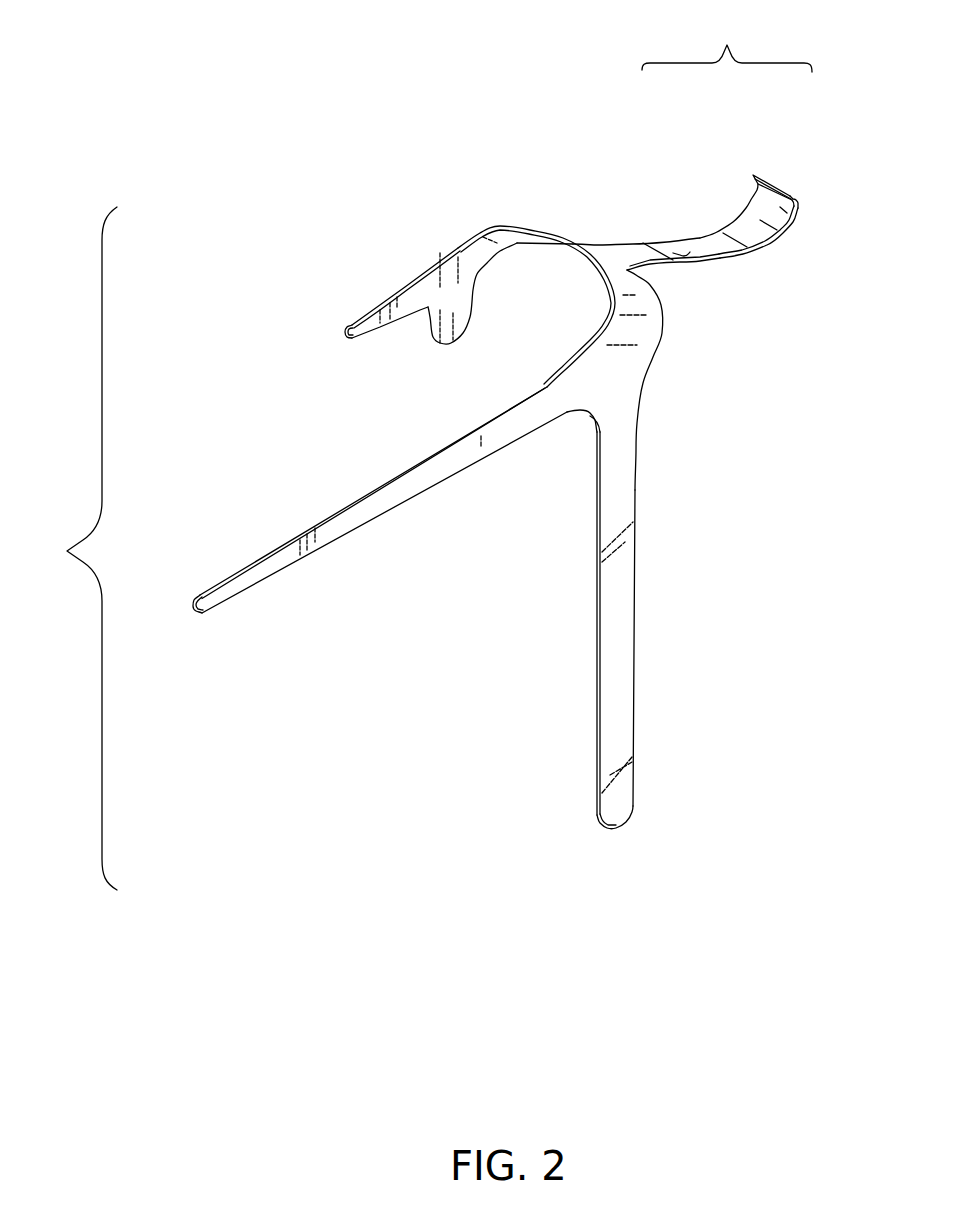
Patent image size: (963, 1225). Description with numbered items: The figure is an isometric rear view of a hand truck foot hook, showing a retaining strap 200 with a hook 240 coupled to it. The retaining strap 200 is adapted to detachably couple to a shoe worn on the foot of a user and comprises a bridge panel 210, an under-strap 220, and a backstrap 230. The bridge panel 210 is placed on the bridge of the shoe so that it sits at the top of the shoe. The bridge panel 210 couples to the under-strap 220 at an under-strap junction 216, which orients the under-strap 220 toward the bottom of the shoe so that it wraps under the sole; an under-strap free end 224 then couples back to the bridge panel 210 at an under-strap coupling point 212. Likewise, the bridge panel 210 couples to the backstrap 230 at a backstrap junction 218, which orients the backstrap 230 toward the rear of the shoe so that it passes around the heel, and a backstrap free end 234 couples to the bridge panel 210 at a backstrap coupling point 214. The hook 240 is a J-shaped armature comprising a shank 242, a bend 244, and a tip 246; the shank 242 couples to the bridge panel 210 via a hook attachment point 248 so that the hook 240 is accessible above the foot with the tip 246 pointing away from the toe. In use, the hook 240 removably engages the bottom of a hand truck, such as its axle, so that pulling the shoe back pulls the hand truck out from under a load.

The retaining strap 200 is at (462, 462).
The bridge panel 210 is at (580, 250).
The under-strap coupling point 212 is at (458, 322).
The backstrap coupling point 214 is at (380, 312).
The under-strap junction 216 is at (623, 377).
The backstrap junction 218 is at (553, 400).
The under-strap 220 is at (612, 617).
The under-strap free end 224 is at (625, 817).
The backstrap 230 is at (353, 520).
The backstrap free end 234 is at (193, 610).
The hook 240 is at (740, 176).
The shank 242 is at (760, 250).
The bend 244 is at (796, 197).
The tip 246 is at (755, 178).
The hook attachment point 248 is at (680, 253).